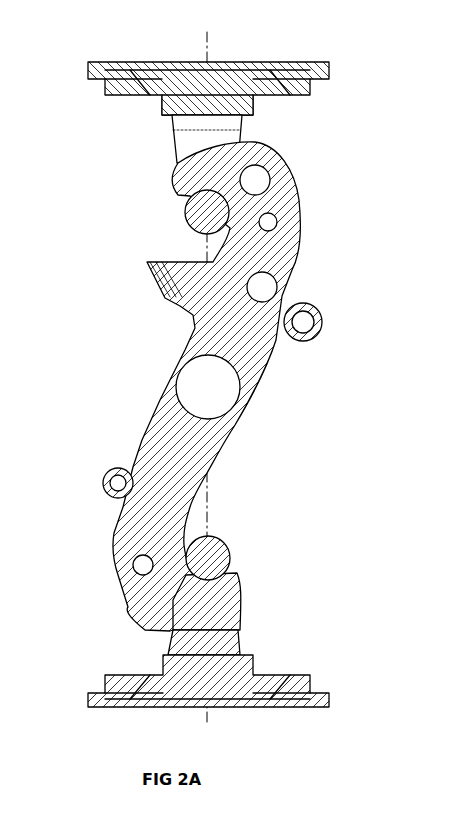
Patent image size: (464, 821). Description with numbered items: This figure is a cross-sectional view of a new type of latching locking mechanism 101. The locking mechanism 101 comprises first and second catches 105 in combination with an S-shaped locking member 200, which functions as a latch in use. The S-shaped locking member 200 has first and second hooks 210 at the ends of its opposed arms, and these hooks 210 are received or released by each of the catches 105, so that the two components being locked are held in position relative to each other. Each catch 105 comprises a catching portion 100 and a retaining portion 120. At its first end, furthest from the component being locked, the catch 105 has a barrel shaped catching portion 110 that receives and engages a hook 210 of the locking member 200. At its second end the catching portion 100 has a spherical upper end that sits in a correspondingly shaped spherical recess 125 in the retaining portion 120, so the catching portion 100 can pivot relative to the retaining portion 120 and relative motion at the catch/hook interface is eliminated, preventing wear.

The latching locking mechanism 101 is at (221, 378).
The catch 105 is at (206, 337).
The spherical recess 125 is at (308, 62).
The retaining portion 120 is at (332, 72).
The catching portion 100 is at (178, 150).
The hook 210 is at (190, 187).
The barrel shaped catching portion 110 is at (172, 385).
The S-shaped locking member 200 is at (283, 262).